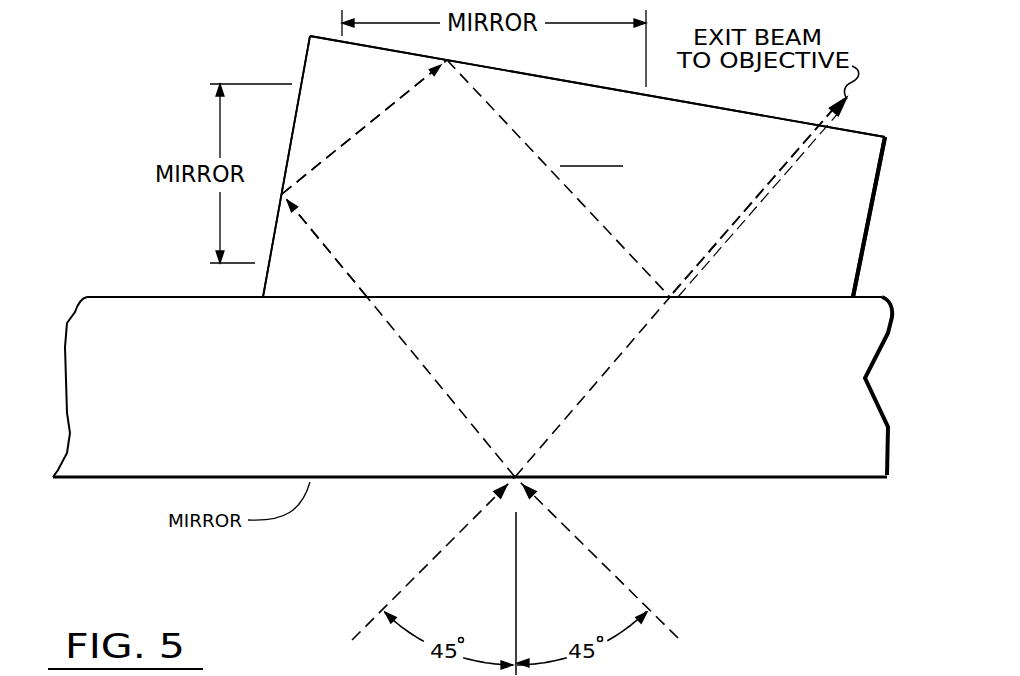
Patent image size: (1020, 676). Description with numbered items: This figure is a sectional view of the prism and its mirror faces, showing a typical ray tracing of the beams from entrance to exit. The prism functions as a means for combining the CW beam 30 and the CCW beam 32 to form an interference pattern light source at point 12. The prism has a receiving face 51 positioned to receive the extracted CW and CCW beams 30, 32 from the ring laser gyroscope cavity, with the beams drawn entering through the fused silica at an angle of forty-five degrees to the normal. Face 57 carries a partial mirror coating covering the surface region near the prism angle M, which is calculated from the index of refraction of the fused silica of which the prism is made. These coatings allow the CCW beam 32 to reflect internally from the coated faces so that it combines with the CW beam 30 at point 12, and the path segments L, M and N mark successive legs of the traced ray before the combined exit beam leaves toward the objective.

The interference light source point 12 is at (673, 292).
The prism face with partial mirror coating 57 is at (293, 132).
The receiving face 51 is at (720, 478).
The CW beam 30 is at (431, 560).
The CCW beam 32 is at (598, 560).
The beam path segment L is at (291, 181).
The prism angle M is at (462, 72).
The beam path segment N is at (783, 130).